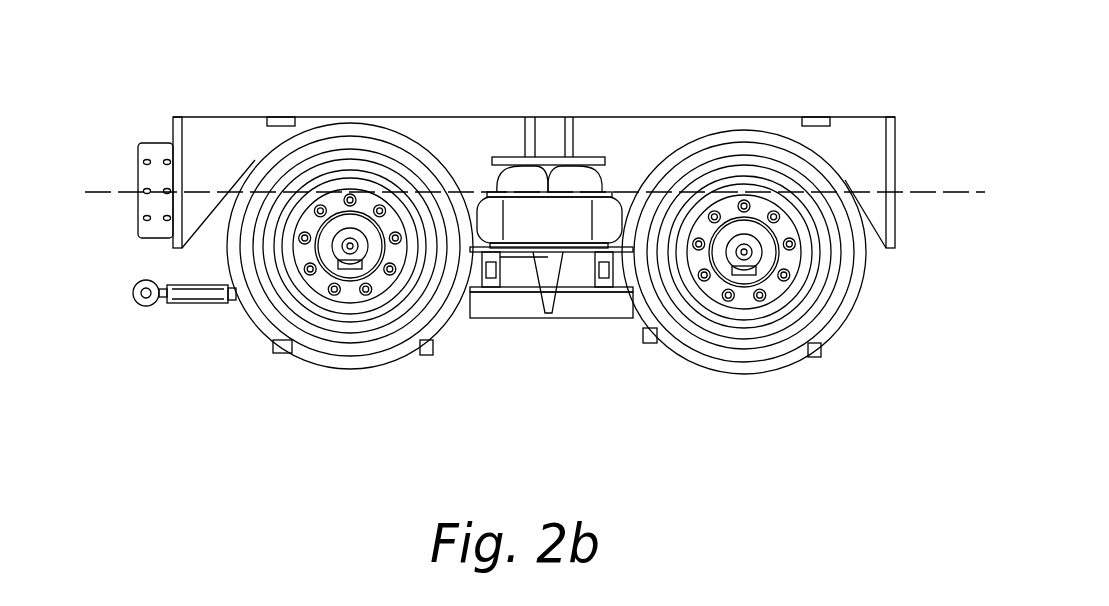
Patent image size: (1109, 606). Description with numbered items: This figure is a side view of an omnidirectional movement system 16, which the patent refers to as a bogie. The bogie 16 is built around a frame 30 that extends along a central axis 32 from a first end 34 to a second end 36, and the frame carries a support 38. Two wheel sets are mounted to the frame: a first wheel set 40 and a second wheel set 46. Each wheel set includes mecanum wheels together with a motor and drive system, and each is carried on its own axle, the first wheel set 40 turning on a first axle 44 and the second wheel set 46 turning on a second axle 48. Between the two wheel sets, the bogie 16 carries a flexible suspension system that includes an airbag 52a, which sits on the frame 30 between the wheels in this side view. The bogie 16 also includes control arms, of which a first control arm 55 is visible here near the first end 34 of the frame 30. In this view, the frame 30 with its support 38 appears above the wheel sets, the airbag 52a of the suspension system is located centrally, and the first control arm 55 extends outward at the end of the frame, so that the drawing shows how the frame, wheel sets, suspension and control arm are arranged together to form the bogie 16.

The omnidirectional movement system 16 is at (900, 73).
The frame 30 is at (517, 360).
The central axis 32 is at (937, 192).
The first end 34 is at (122, 372).
The second end 36 is at (885, 324).
The support 38 is at (197, 142).
The first wheel set 40 is at (328, 403).
The first axle 44 is at (363, 280).
The second wheel set 46 is at (737, 407).
The second axle 48 is at (768, 277).
The airbag 52a is at (572, 207).
The first control arm 55 is at (172, 307).